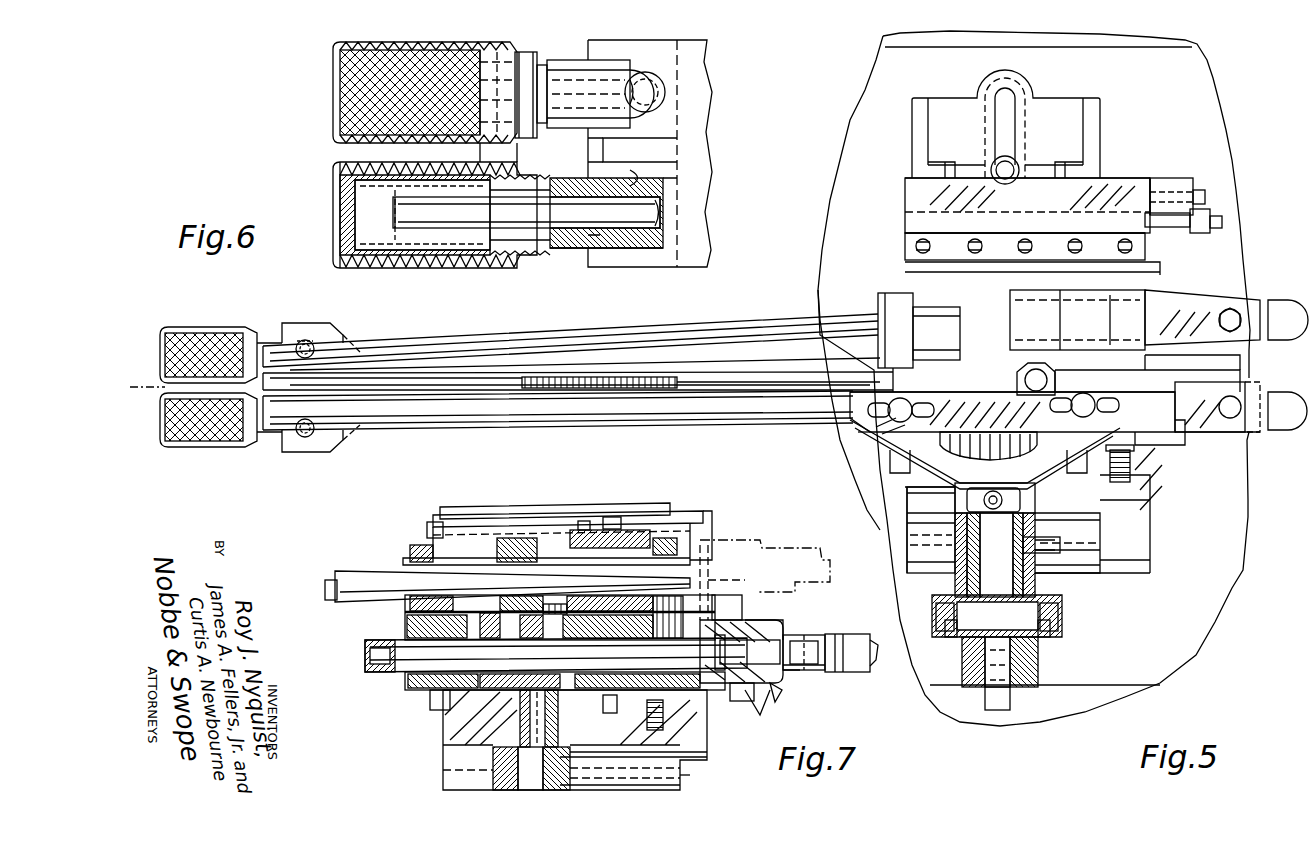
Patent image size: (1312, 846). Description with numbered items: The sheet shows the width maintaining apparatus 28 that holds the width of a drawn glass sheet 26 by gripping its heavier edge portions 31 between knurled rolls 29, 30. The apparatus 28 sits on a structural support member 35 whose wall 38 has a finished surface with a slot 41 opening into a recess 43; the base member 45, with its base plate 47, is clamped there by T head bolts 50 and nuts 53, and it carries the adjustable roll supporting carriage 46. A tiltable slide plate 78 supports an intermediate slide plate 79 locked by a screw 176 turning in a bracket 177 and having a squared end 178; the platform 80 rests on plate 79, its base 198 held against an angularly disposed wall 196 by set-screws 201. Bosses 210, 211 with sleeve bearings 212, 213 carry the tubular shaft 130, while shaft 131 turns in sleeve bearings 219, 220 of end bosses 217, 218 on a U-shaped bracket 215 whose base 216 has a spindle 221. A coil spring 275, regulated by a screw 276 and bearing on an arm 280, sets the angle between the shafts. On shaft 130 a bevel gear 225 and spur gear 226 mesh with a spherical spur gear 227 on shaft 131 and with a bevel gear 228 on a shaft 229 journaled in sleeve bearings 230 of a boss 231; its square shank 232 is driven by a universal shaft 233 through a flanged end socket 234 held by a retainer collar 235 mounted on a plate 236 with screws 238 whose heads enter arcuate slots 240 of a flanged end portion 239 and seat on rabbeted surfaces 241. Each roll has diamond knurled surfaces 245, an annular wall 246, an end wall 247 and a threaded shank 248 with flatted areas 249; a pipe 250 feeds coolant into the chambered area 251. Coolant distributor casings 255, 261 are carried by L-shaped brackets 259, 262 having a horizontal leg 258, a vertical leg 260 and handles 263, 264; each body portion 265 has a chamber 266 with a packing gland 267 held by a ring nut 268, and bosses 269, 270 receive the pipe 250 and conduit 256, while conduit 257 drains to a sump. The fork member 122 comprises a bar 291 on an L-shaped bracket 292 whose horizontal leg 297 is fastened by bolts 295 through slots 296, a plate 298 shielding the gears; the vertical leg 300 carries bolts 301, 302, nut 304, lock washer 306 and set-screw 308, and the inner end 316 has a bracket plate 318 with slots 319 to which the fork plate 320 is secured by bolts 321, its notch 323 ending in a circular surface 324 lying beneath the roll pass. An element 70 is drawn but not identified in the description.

In FIG. 5, the glass sheet 26 is at (153, 383).
In FIG. 5, the width maintaining apparatus 28 is at (905, 218).
In FIG. 6, the knurled roll 29 is at (345, 190).
In FIG. 5, the knurled roll 29 is at (212, 422).
In FIG. 6, the knurled roll 30 is at (335, 97).
In FIG. 5, the knurled roll 30 is at (205, 352).
In FIG. 5, the heavier edge portions 31 is at (196, 428).
In FIG. 5, the structural support member 35 is at (887, 87).
In FIG. 5, the wall 38 is at (852, 143).
In FIG. 5, the slot 41 is at (1016, 110).
In FIG. 5, the elongated recess 43 is at (1020, 92).
In FIG. 5, the base member 45 is at (938, 171).
In FIG. 5, the adjustable roll supporting carriage 46 is at (905, 183).
In FIG. 5, the base plate 47 is at (1068, 173).
In FIG. 5, the T head bolts 50 is at (1020, 162).
In FIG. 5, the nuts 53 is at (986, 162).
In FIG. 5, the bracket post 70 is at (918, 127).
In FIG. 5, the tiltable slide plate 78 is at (1115, 179).
In FIG. 5, the intermediate slide plate 79 is at (1132, 546).
In FIG. 7, the intermediate slide plate 79 is at (690, 780).
In FIG. 5, the bearing platform 80 is at (1122, 522).
In FIG. 7, the bearing platform 80 is at (482, 770).
In FIG. 6, the fork member 122 is at (695, 196).
In FIG. 5, the fork member 122 is at (655, 380).
In FIG. 6, the tubular shaft 130 is at (614, 244).
In FIG. 5, the tubular shaft 130 is at (600, 425).
In FIG. 7, the tubular shaft 130 is at (380, 680).
In FIG. 6, the tubular shaft 131 is at (607, 65).
In FIG. 5, the tubular shaft 131 is at (578, 346).
In FIG. 7, the tubular shaft 131 is at (377, 576).
In FIG. 5, the screw 176 is at (1165, 222).
In FIG. 5, the bracket 177 is at (1176, 183).
In FIG. 5, the squared end 178 is at (1202, 222).
In FIG. 5, the angularly disposed wall 196 is at (910, 242).
In FIG. 5, the base 198 is at (1122, 502).
In FIG. 7, the base 198 is at (690, 748).
In FIG. 5, the set-screws 201 is at (1030, 236).
In FIG. 7, the boss 210 is at (408, 622).
In FIG. 7, the boss 211 is at (558, 740).
In FIG. 7, the sleeve bearing 212 is at (422, 690).
In FIG. 7, the sleeve bearing 213 is at (608, 712).
In FIG. 5, the U-shaped bracket 215 is at (900, 278).
In FIG. 7, the U-shaped bracket 215 is at (582, 530).
In FIG. 5, the web or base 216 is at (937, 282).
In FIG. 7, the web or base 216 is at (480, 545).
In FIG. 5, the end boss 217 is at (890, 330).
In FIG. 7, the end boss 217 is at (425, 542).
In FIG. 5, the end boss 218 is at (1040, 282).
In FIG. 7, the end boss 218 is at (575, 535).
In FIG. 7, the sleeve bearing 219 is at (440, 522).
In FIG. 7, the sleeve bearing 220 is at (620, 530).
In FIG. 5, the plug or spindle 221 is at (936, 333).
In FIG. 7, the bevel gear 225 is at (437, 706).
In FIG. 7, the spur gear 226 is at (492, 710).
In FIG. 5, the spherical spur gear 227 is at (990, 282).
In FIG. 7, the spherical spur gear 227 is at (520, 540).
In FIG. 5, the bevel gear 228 is at (1046, 460).
In FIG. 7, the bevel gear 228 is at (456, 752).
In FIG. 5, the shaft 229 is at (1000, 580).
In FIG. 7, the shaft 229 is at (592, 760).
In FIG. 5, the sleeve bearings 230 is at (960, 585).
In FIG. 5, the boss 231 is at (1040, 562).
In FIG. 7, the boss 231 is at (462, 792).
In FIG. 5, the square shank 232 is at (978, 686).
In FIG. 5, the universal shaft 233 is at (1012, 692).
In FIG. 5, the flanged end socket 234 is at (1028, 672).
In FIG. 5, the retainer collar 235 is at (1062, 632).
In FIG. 5, the plate 236 is at (1062, 600).
In FIG. 5, the screws 238 is at (962, 655).
In FIG. 5, the flanged end portion 239 is at (950, 632).
In FIG. 5, the arcuate slots 240 is at (1062, 617).
In FIG. 5, the rabbeted surfaces 241 is at (1066, 640).
In FIG. 6, the diamond knurled peripheral surfaces 245 is at (400, 50).
In FIG. 6, the annular wall 246 is at (442, 253).
In FIG. 6, the end wall 247 is at (353, 242).
In FIG. 6, the shank portion 248 is at (522, 80).
In FIG. 6, the flatted areas 249 is at (538, 92).
In FIG. 6, the pipe 250 is at (640, 108).
In FIG. 7, the pipe 250 is at (330, 580).
In FIG. 6, the inner chambered area 251 is at (393, 222).
In FIG. 5, the coolant distributor casing 255 is at (1246, 418).
In FIG. 7, the coolant distributor casing 255 is at (786, 623).
In FIG. 7, the conduit 256 is at (845, 640).
In FIG. 7, the conduit 257 is at (756, 712).
In FIG. 5, the horizontal leg 258 is at (1240, 433).
In FIG. 5, the L-shaped bracket 259 is at (1236, 437).
In FIG. 5, the vertical leg 260 is at (1137, 470).
In FIG. 7, the coolant casing 261 is at (735, 538).
In FIG. 5, the L-shaped bracket 262 is at (1160, 305).
In FIG. 7, the L-shaped bracket 262 is at (706, 545).
In FIG. 5, the handle 263 is at (1280, 418).
In FIG. 5, the handle 264 is at (1280, 310).
In FIG. 7, the body portion 265 is at (770, 612).
In FIG. 7, the hollow chamber 266 is at (778, 690).
In FIG. 7, the packing gland 267 is at (722, 638).
In FIG. 7, the ring nut 268 is at (717, 620).
In FIG. 7, the inwardly directed boss 269 is at (788, 672).
In FIG. 7, the outer boss 270 is at (780, 642).
In FIG. 5, the coil spring 275 is at (1148, 362).
In FIG. 7, the coil spring 275 is at (692, 603).
In FIG. 5, the screw 276 is at (1095, 476).
In FIG. 5, the arm 280 is at (1086, 282).
In FIG. 5, the elongated bar 291 is at (497, 380).
In FIG. 5, the L-shaped bracket 292 is at (893, 437).
In FIG. 5, the bolts 295 is at (873, 430).
In FIG. 5, the slots 296 is at (1068, 410).
In FIG. 5, the horizontal leg 297 is at (887, 433).
In FIG. 5, the plate 298 is at (940, 460).
In FIG. 5, the vertical leg 300 is at (870, 395).
In FIG. 5, the bolt 301 is at (882, 387).
In FIG. 5, the bolt 302 is at (1152, 434).
In FIG. 5, the nut 304 is at (918, 410).
In FIG. 5, the lock washer 306 is at (1168, 406).
In FIG. 5, the set-screw 308 is at (1038, 377).
In FIG. 6, the inner end 316 is at (690, 147).
In FIG. 5, the inner end 316 is at (441, 390).
In FIG. 6, the horizontal bracket plate 318 is at (666, 90).
In FIG. 5, the horizontal bracket plate 318 is at (332, 340).
In FIG. 6, the slots 319 is at (665, 72).
In FIG. 5, the slots 319 is at (306, 336).
In FIG. 6, the fork plate 320 is at (577, 258).
In FIG. 5, the fork plate 320 is at (270, 332).
In FIG. 6, the bolts 321 is at (657, 92).
In FIG. 5, the bolts 321 is at (352, 352).
In FIG. 6, the notch 323 is at (372, 206).
In FIG. 6, the circularly shaped end surface 324 is at (495, 152).